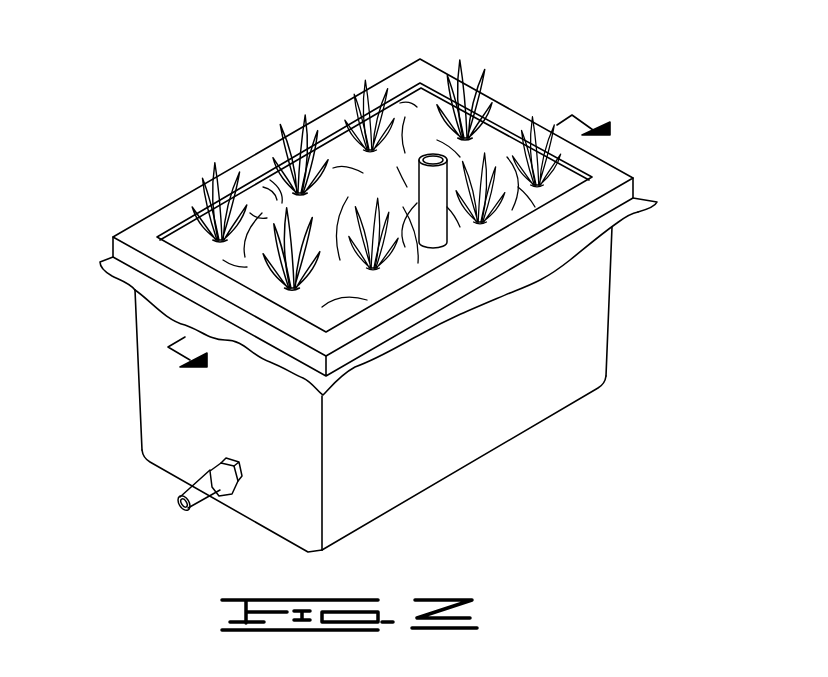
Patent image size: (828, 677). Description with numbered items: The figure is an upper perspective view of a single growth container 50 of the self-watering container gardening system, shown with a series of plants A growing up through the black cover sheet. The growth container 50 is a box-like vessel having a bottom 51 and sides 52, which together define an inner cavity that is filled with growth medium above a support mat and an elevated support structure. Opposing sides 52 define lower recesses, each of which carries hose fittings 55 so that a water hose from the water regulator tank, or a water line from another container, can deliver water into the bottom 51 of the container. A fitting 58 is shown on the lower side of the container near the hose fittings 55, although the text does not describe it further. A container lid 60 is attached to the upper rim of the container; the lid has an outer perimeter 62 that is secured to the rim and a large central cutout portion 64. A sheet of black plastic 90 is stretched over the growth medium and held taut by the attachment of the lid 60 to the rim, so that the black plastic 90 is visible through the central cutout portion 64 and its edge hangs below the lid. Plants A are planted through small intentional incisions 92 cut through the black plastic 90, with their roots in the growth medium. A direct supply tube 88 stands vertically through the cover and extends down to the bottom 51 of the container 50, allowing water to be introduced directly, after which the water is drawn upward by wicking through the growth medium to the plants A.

The growth container 50 is at (128, 63).
The bottom 51 is at (555, 413).
The sides 52 is at (585, 332).
The hose fittings 55 is at (200, 508).
The nut fitting 58 is at (198, 472).
The container lid 60 is at (612, 177).
The outer perimeter 62 is at (150, 227).
The central cutout portion 64 is at (340, 147).
The direct supply tube 88 is at (433, 153).
The sheet of black plastic 90 is at (495, 140).
The incisions 92 is at (137, 291).
The plants A is at (222, 173).